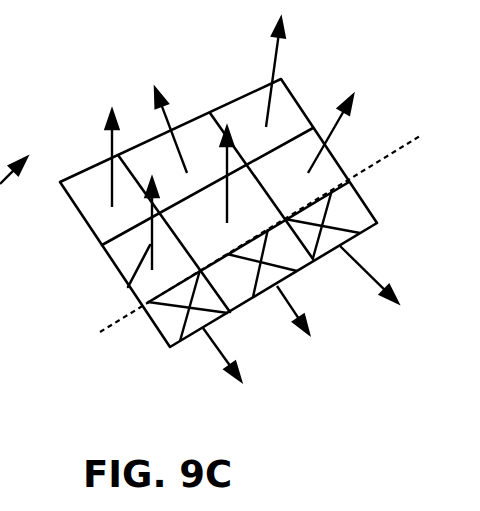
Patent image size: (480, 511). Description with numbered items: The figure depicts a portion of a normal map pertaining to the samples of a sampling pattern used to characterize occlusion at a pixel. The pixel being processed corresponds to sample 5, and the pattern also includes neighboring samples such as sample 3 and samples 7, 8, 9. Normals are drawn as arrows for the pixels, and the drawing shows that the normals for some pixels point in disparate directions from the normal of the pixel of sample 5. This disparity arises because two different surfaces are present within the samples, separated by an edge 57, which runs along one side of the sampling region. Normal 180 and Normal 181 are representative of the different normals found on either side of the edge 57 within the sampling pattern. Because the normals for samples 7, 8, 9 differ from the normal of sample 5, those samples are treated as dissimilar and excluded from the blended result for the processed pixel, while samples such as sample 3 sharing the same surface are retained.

The sample 3 is at (263, 76).
The sample 5 is at (224, 175).
The sample 7 is at (188, 305).
The sample 8 is at (262, 263).
The sample 9 is at (322, 224).
The edge 57 is at (101, 334).
The normal 180 is at (128, 287).
The normal 181 is at (222, 350).